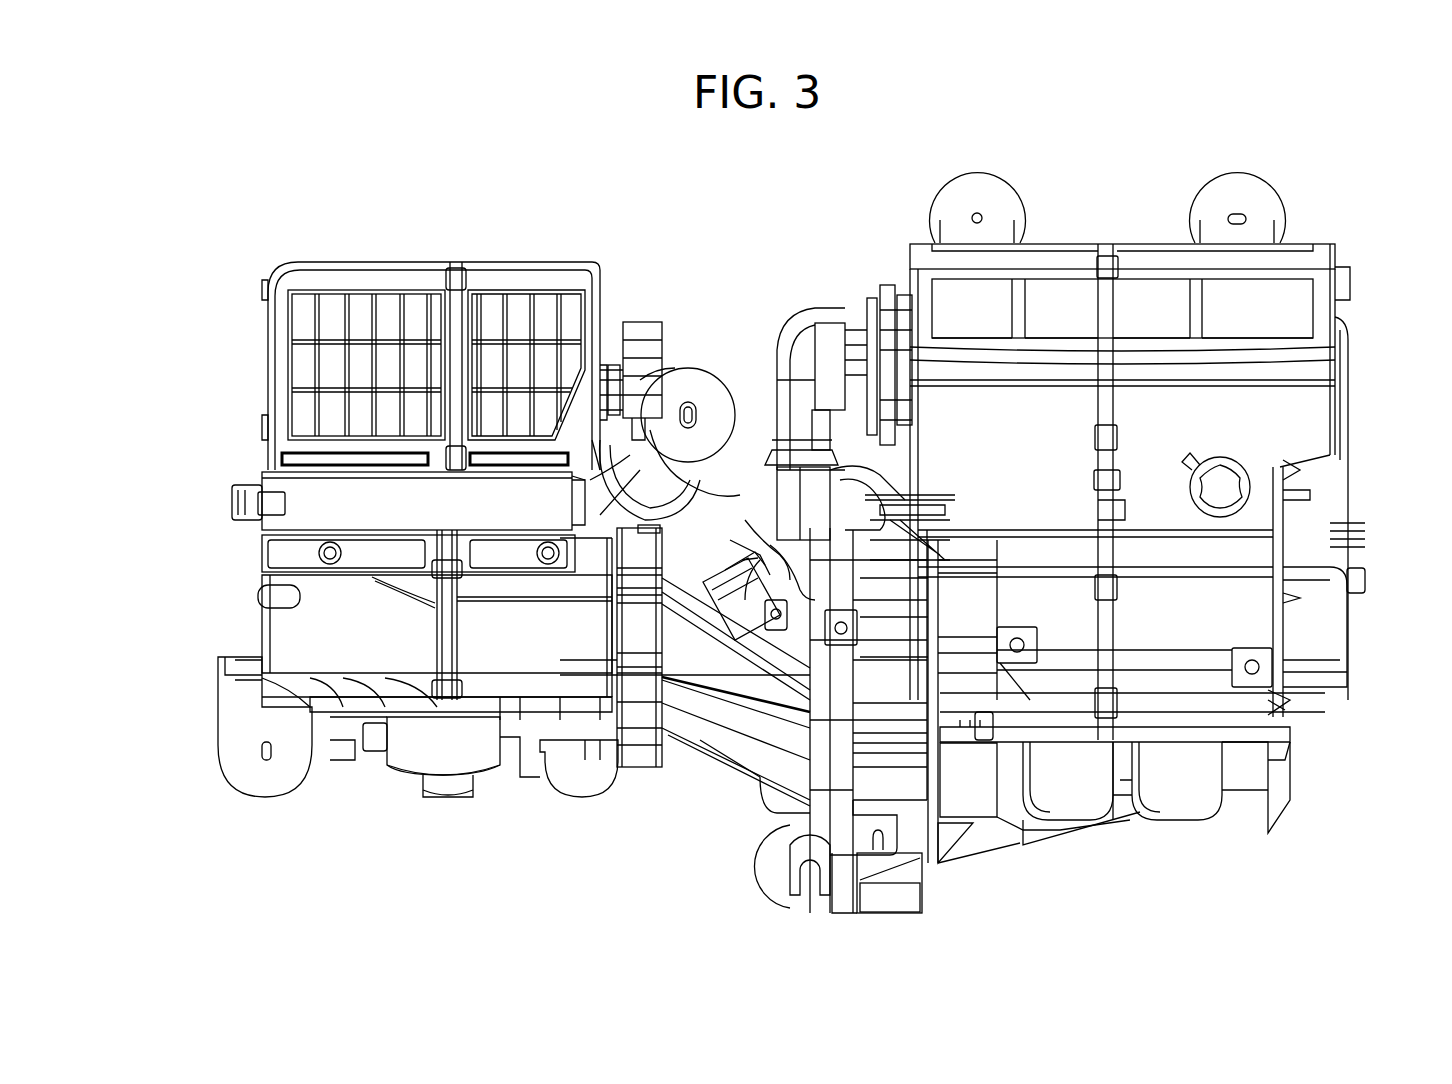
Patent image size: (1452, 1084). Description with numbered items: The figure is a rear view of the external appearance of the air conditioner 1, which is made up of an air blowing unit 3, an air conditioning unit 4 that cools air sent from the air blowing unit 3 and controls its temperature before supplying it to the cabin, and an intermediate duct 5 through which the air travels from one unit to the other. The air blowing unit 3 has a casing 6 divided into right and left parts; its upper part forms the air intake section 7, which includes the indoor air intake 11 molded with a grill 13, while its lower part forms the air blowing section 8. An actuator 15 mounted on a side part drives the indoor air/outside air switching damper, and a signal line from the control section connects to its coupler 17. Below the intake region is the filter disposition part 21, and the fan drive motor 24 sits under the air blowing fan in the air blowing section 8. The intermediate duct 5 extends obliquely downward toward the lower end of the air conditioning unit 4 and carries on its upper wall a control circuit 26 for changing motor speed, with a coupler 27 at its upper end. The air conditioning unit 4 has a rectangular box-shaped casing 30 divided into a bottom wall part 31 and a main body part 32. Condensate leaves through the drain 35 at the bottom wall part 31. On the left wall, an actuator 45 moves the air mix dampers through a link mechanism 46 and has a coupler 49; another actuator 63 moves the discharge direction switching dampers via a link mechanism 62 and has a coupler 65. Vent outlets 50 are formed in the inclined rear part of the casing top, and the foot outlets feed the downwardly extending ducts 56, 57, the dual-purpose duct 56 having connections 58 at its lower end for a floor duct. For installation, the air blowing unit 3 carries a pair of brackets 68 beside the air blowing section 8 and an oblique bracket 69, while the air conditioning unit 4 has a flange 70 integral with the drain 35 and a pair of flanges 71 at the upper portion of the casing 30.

The air conditioner 1 is at (752, 212).
The air blowing unit 3 is at (196, 498).
The air conditioning unit 4 is at (1117, 200).
The intermediate duct 5 is at (693, 760).
The casing 6 is at (262, 352).
The air intake section 7 is at (265, 482).
The air blowing section 8 is at (272, 628).
The indoor air intake 11 is at (307, 305).
The grill 13 is at (365, 317).
The actuator 15 is at (640, 328).
The coupler 17 is at (664, 375).
The filter disposition part 21 is at (345, 490).
The fan drive motor 24 is at (425, 780).
The control circuit 26 is at (705, 580).
The coupler 27 is at (727, 555).
The casing 30 is at (1340, 745).
The bottom wall part 31 is at (1253, 768).
The main body part 32 is at (1288, 702).
The drain 35 is at (925, 897).
The actuator 45 is at (830, 500).
The link mechanism 46 is at (950, 497).
The coupler 49 is at (804, 552).
The vent outlets 50 is at (1010, 350).
The duct 56 is at (1350, 615).
The duct 57 is at (790, 350).
The connections 58 is at (1062, 820).
The link mechanism 62 is at (870, 300).
The actuator 63 is at (820, 335).
The coupler 65 is at (812, 420).
The brackets 68 is at (282, 800).
The bracket 69 is at (704, 372).
The flange 70 is at (762, 862).
The flanges 71 is at (955, 168).